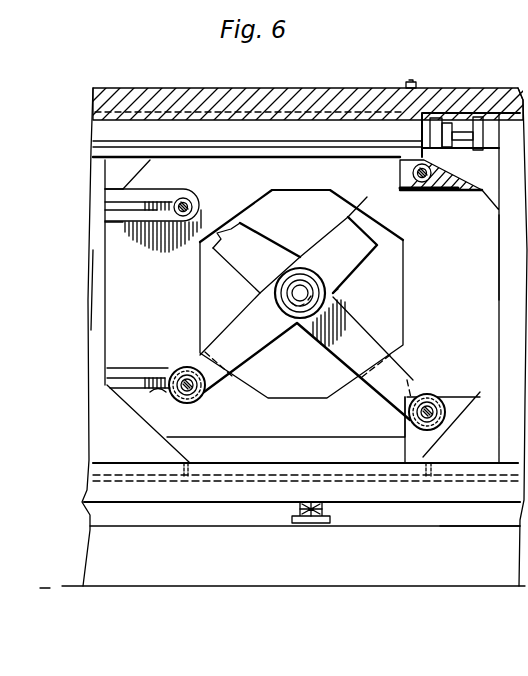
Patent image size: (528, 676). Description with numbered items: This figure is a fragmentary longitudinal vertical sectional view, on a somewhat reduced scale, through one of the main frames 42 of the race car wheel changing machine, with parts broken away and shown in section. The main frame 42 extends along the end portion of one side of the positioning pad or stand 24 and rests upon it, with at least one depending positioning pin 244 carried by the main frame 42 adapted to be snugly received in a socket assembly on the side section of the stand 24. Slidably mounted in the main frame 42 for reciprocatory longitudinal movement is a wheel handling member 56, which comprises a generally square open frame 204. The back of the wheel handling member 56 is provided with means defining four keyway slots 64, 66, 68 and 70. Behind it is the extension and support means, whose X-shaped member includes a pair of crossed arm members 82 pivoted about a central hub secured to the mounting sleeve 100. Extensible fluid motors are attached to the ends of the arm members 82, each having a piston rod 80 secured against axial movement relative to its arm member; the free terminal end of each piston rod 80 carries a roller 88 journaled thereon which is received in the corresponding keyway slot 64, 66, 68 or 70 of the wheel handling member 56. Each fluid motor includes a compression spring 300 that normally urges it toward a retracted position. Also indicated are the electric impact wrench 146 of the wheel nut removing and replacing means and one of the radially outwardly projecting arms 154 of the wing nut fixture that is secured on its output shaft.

The main frame 42 is at (322, 88).
The roller 88 is at (176, 201).
The piston rod 80 is at (193, 201).
The keyway slot 70 is at (153, 212).
The crossed arm members 82 is at (283, 253).
The mounting sleeve 100 is at (280, 282).
The electric impact wrench 146 is at (312, 283).
The radially outwardly projecting arms 154 is at (336, 293).
The keyway slot 64 is at (411, 193).
The wheel handling member 56 is at (497, 263).
The open frame 204 is at (118, 296).
The compression spring 300 is at (180, 370).
The keyway slot 68 is at (160, 390).
The keyway slot 66 is at (407, 393).
The depending positioning pin 244 is at (310, 523).
The positioning pad or stand 24 is at (480, 541).